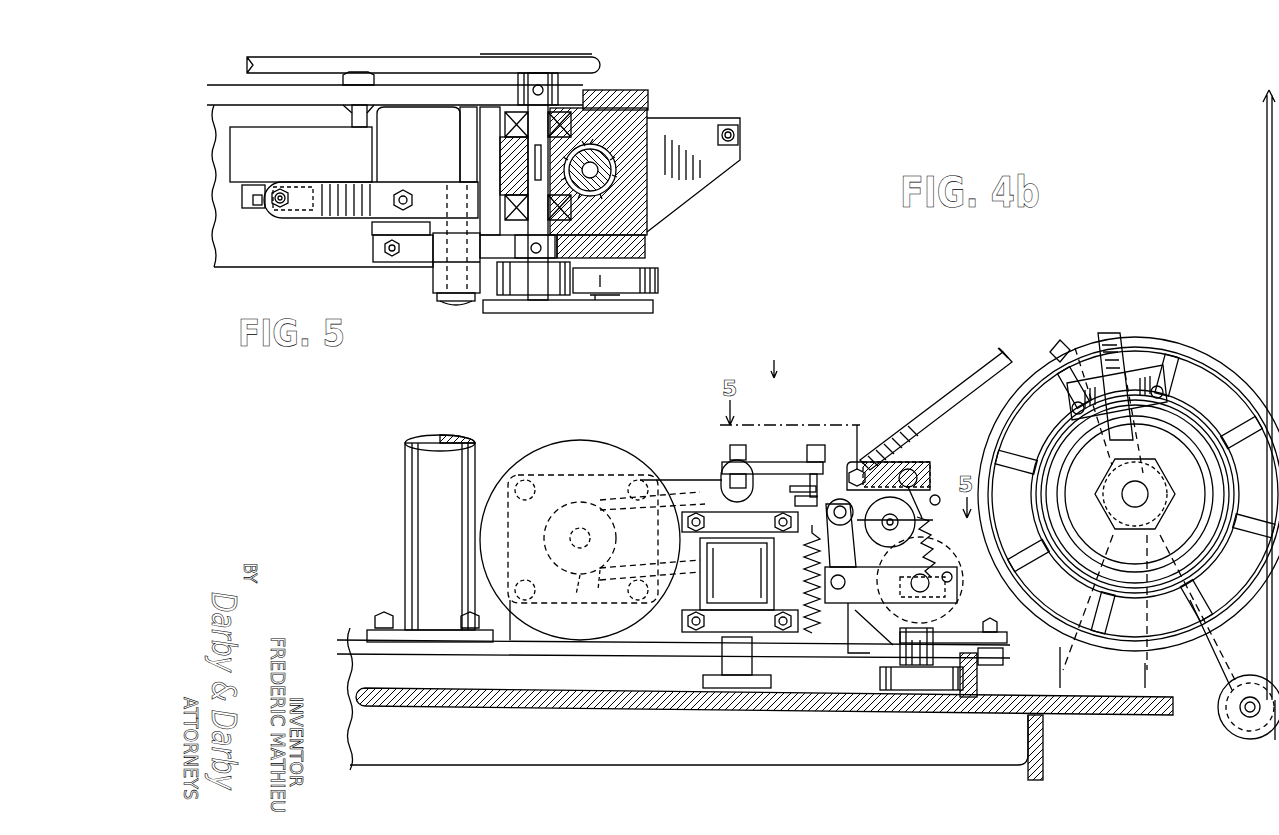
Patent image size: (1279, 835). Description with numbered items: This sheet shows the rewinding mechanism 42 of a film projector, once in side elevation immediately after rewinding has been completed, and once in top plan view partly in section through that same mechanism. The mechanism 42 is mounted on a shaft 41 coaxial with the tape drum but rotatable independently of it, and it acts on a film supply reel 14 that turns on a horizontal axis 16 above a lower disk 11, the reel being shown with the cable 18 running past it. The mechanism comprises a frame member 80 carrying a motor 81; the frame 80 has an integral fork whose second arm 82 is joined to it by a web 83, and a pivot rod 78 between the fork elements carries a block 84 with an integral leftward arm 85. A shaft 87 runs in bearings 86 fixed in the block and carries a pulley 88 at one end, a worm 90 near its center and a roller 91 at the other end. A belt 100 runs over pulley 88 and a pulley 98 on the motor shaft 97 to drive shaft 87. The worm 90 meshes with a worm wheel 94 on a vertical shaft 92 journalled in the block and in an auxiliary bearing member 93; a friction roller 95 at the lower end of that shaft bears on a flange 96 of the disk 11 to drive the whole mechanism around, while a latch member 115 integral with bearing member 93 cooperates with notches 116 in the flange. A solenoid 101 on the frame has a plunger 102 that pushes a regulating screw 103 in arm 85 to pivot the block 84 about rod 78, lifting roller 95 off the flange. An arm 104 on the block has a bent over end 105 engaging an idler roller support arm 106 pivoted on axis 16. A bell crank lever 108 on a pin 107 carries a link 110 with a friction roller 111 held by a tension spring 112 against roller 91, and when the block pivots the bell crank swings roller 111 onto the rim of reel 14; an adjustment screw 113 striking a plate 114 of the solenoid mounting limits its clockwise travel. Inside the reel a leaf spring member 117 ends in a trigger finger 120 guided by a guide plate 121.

In FIG. 4B, the lower disk 11 is at (820, 704).
In FIG. 4B, the film supply reel 14 is at (1175, 650).
In FIG. 4B, the horizontal axis 16 is at (1135, 498).
In FIG. 4B, the cable 18 is at (1266, 268).
In FIG. 4B, the shaft 41 is at (455, 463).
In FIG. 4B, the rewinding mechanism 42 is at (762, 359).
In FIG. 4B, the pivot rod 78 is at (932, 485).
In FIG. 5, the frame member 80 is at (650, 98).
In FIG. 4B, the frame member 80 is at (683, 478).
In FIG. 4B, the motor 81 is at (597, 458).
In FIG. 5, the second arm of fork 82 is at (646, 247).
In FIG. 4B, the second arm of fork 82 is at (957, 542).
In FIG. 5, the web 83 is at (466, 124).
In FIG. 4B, the web 83 is at (855, 656).
In FIG. 5, the block 84 is at (647, 222).
In FIG. 4B, the block 84 is at (846, 465).
In FIG. 5, the arm 85 is at (357, 212).
In FIG. 4B, the arm 85 is at (790, 460).
In FIG. 5, the bearings 86 is at (508, 126).
In FIG. 5, the shaft 87 is at (570, 128).
In FIG. 4B, the shaft 87 is at (882, 533).
In FIG. 5, the pulley 88 is at (595, 68).
In FIG. 5, the worm 90 is at (515, 158).
In FIG. 5, the roller 91 is at (506, 298).
In FIG. 4B, the roller 91 is at (934, 536).
In FIG. 5, the vertical shaft 92 is at (645, 140).
In FIG. 4B, the vertical shaft 92 is at (912, 652).
In FIG. 4B, the auxiliary bearing member 93 is at (905, 634).
In FIG. 5, the worm wheel 94 is at (600, 150).
In FIG. 4B, the friction roller 95 is at (913, 690).
In FIG. 4B, the flange 96 is at (977, 684).
In FIG. 4B, the motor shaft 97 is at (565, 587).
In FIG. 4B, the pulley 98 is at (580, 502).
In FIG. 4B, the belt 100 is at (606, 585).
In FIG. 4B, the solenoid 101 is at (740, 600).
In FIG. 5, the plunger 102 is at (258, 205).
In FIG. 4B, the plunger 102 is at (732, 463).
In FIG. 5, the regulating screw 103 is at (296, 167).
In FIG. 4B, the regulating screw 103 is at (793, 460).
In FIG. 4B, the arm 104 is at (968, 388).
In FIG. 4B, the bent over end 105 is at (1004, 356).
In FIG. 4B, the idler roller support arm 106 is at (1060, 352).
In FIG. 5, the pin 107 is at (462, 305).
In FIG. 4B, the pin 107 is at (857, 508).
In FIG. 5, the bell crank lever 108 is at (425, 252).
In FIG. 4B, the bell crank lever 108 is at (828, 540).
In FIG. 5, the link 110 is at (544, 305).
In FIG. 4B, the link 110 is at (891, 585).
In FIG. 5, the friction roller 111 is at (658, 279).
In FIG. 4B, the friction roller 111 is at (957, 584).
In FIG. 4B, the tension spring 112 is at (928, 457).
In FIG. 5, the adjustment screw 113 is at (385, 245).
In FIG. 4B, the adjustment screw 113 is at (790, 488).
In FIG. 4B, the plate 114 is at (795, 499).
In FIG. 5, the latch member 115 is at (740, 135).
In FIG. 4B, the latch member 115 is at (988, 640).
In FIG. 4B, the notches 116 is at (990, 660).
In FIG. 4B, the leaf spring member 117 is at (1073, 508).
In FIG. 4B, the trigger finger 120 is at (1120, 346).
In FIG. 4B, the guide plate 121 is at (1165, 373).